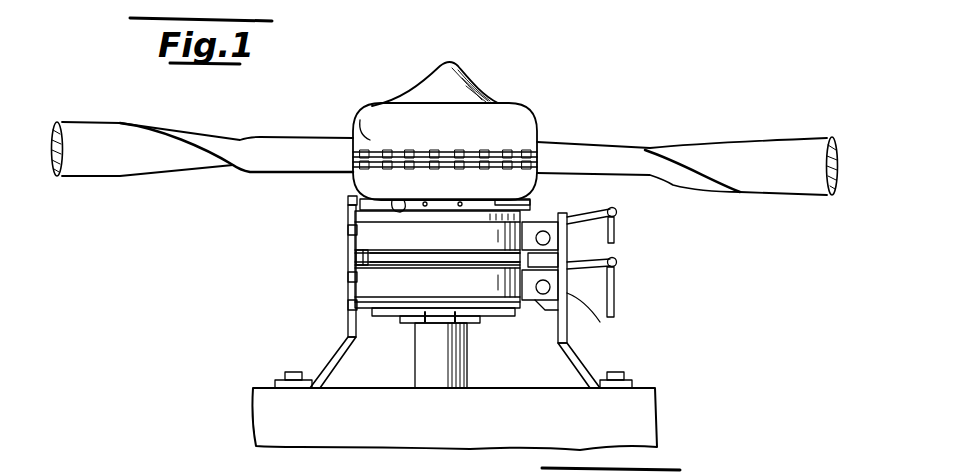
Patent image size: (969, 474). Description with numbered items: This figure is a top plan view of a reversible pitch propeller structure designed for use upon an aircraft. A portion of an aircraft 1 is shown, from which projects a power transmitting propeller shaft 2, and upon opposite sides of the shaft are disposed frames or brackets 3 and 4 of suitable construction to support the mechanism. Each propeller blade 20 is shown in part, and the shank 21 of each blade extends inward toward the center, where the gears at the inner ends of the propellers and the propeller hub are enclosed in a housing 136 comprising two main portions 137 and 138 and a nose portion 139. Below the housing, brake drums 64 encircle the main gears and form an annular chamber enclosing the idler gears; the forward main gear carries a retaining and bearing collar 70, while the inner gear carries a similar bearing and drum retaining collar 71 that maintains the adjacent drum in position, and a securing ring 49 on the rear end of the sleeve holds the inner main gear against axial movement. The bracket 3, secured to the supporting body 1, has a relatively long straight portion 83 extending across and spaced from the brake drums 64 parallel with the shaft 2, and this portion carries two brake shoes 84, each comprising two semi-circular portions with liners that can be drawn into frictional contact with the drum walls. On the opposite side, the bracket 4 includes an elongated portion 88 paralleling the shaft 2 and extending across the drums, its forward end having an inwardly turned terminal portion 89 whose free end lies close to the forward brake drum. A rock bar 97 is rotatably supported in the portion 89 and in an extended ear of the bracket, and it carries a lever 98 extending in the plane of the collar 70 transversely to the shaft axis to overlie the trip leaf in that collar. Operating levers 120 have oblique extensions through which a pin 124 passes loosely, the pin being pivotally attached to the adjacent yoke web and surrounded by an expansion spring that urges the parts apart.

The portion of an aircraft 1 is at (640, 413).
The propeller shaft 2 is at (462, 380).
The bracket 3 is at (322, 357).
The bracket 4 is at (589, 367).
The propeller blade 20 is at (133, 165).
The shank of propeller blade 21 is at (303, 143).
The securing ring 49 is at (466, 328).
The brake drum 64 is at (342, 211).
The retaining and bearing collar 70 is at (420, 190).
The bearing and drum retaining collar 71 is at (478, 316).
The straight portion of bracket 83 is at (350, 258).
The brake shoe 84 is at (367, 243).
The elongated portion of bracket 88 is at (600, 284).
The inwardly turned terminal portion 89 is at (614, 209).
The rock bar 97 is at (558, 258).
The lever 98 is at (515, 206).
The operating lever 120 is at (616, 228).
The pin 124 is at (600, 322).
The housing 136 is at (542, 115).
The main portion of housing 137 is at (376, 106).
The main portion of housing 138 is at (532, 196).
The nose portion 139 is at (450, 60).